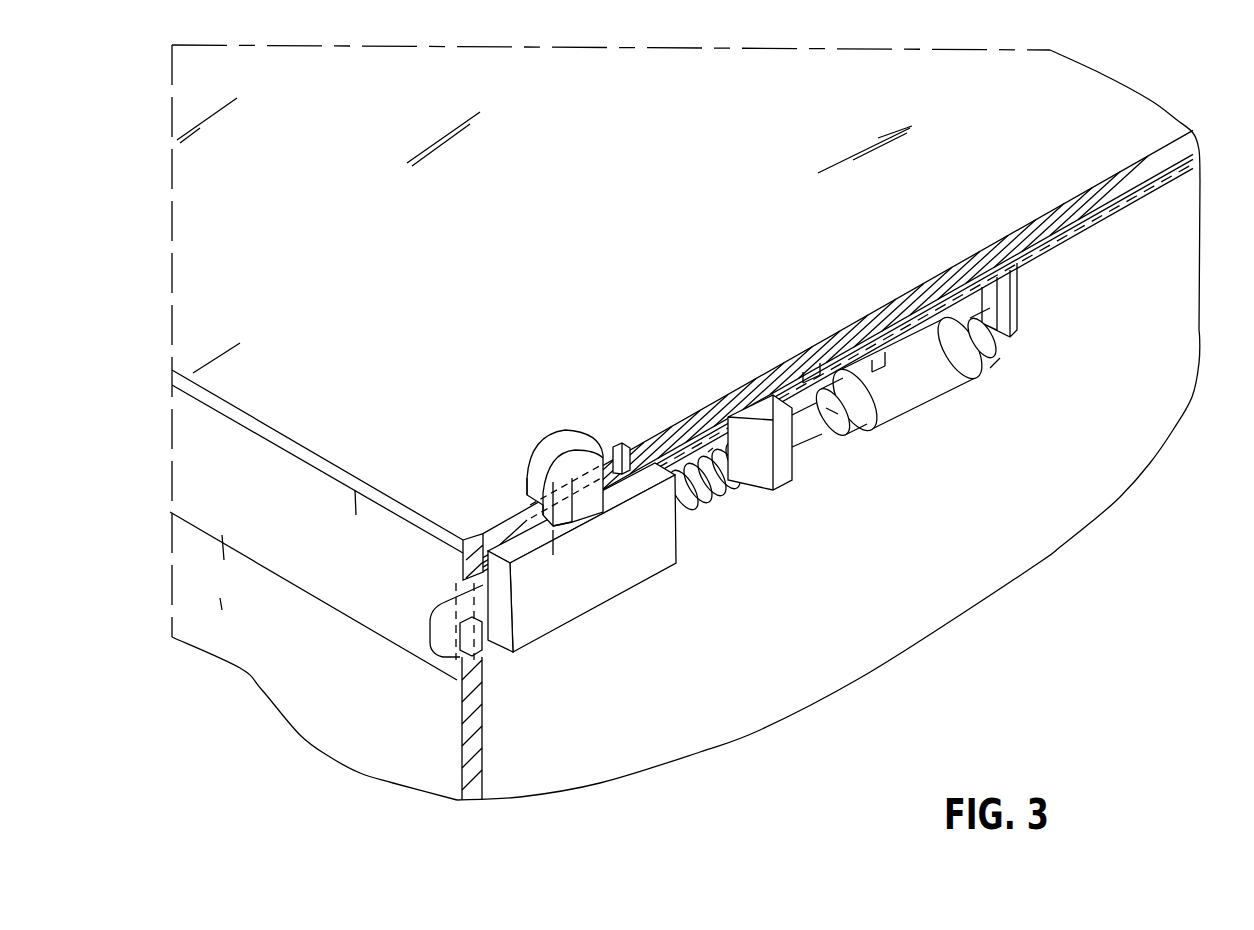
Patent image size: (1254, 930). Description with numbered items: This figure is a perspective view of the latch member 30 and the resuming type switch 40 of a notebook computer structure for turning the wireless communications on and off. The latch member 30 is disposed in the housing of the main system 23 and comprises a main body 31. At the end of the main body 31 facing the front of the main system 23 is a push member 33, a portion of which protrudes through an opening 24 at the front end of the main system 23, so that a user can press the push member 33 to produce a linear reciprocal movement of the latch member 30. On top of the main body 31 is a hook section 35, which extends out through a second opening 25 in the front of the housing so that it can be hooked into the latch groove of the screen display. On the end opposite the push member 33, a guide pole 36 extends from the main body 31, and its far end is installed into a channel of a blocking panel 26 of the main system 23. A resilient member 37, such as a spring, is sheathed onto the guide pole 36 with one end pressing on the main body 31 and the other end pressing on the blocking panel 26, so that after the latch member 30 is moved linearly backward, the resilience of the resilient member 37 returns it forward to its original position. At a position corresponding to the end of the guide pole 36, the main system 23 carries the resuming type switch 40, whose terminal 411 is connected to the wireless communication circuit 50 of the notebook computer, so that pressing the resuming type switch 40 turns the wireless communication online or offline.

The main system 23 is at (1113, 103).
The opening 24 is at (447, 580).
The opening 25 is at (613, 447).
The blocking panel 26 is at (782, 470).
The latch member 30 is at (554, 533).
The main body 31 is at (565, 602).
The push member 33 is at (450, 632).
The hook section 35 is at (567, 455).
The guide pole 36 is at (697, 507).
The resilient member 37 is at (710, 450).
The resuming type switch 40 is at (903, 380).
The terminal 411 is at (990, 298).
The wireless communication circuit 50 is at (1107, 218).